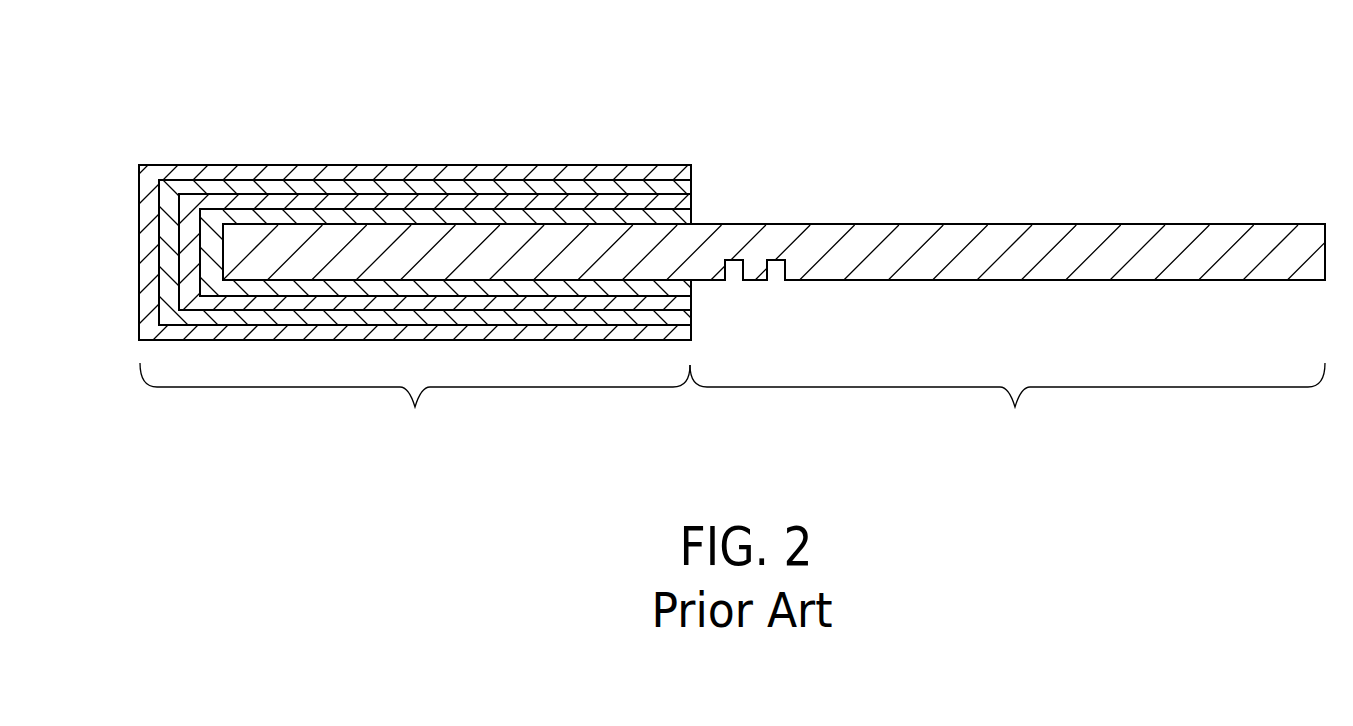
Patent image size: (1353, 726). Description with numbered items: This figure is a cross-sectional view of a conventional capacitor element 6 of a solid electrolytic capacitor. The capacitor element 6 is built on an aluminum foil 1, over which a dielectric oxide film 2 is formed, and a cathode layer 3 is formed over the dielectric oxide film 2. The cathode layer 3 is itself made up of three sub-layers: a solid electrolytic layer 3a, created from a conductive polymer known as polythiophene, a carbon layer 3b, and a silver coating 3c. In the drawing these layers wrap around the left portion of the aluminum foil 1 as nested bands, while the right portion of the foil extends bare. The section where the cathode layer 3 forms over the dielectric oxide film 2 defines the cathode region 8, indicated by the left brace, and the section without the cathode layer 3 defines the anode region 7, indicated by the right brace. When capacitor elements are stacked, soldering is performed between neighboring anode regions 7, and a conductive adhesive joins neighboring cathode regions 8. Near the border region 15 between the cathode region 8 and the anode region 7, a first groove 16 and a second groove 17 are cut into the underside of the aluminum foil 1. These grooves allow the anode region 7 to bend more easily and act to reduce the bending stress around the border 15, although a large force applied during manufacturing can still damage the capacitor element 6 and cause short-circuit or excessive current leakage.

The aluminum foil 1 is at (405, 242).
The dielectric oxide film 2 is at (477, 220).
The cathode layer 3 is at (421, 171).
The solid electrolytic layer 3a is at (563, 205).
The carbon layer 3b is at (623, 183).
The silver coating 3c is at (675, 173).
The capacitor element 6 is at (732, 175).
The anode region 7 is at (1007, 403).
The cathode region 8 is at (415, 403).
The border region 15 is at (691, 281).
The first groove 16 is at (733, 262).
The second groove 17 is at (778, 262).